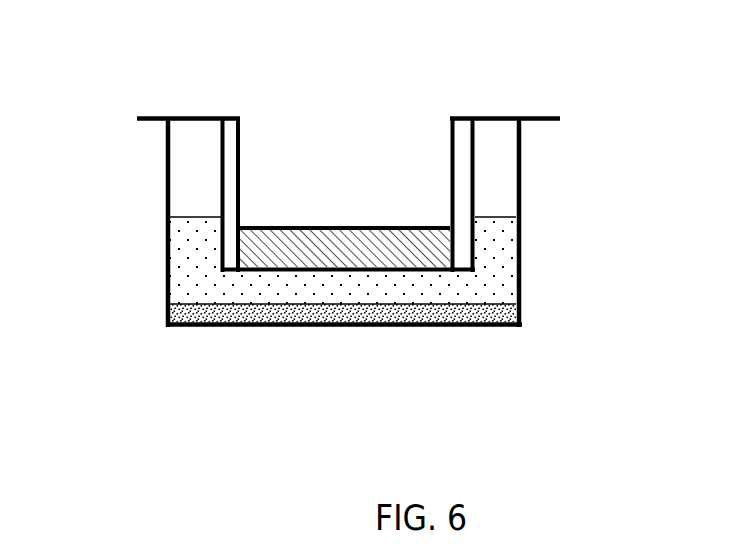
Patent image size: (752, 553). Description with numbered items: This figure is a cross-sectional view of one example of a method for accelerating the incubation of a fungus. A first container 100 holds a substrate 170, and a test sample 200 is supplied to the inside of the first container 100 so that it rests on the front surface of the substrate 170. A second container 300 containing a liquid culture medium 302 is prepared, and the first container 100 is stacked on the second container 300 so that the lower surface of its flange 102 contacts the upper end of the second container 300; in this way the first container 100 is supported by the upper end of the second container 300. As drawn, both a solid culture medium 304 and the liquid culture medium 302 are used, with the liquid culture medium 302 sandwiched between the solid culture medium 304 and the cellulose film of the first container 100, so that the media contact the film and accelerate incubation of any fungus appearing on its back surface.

The first container 100 is at (415, 133).
The flange 102 is at (557, 122).
The substrate 170 is at (417, 273).
The test sample 200 is at (268, 257).
The second container 300 is at (166, 261).
The liquid culture medium 302 is at (338, 295).
The solid culture medium 304 is at (482, 313).